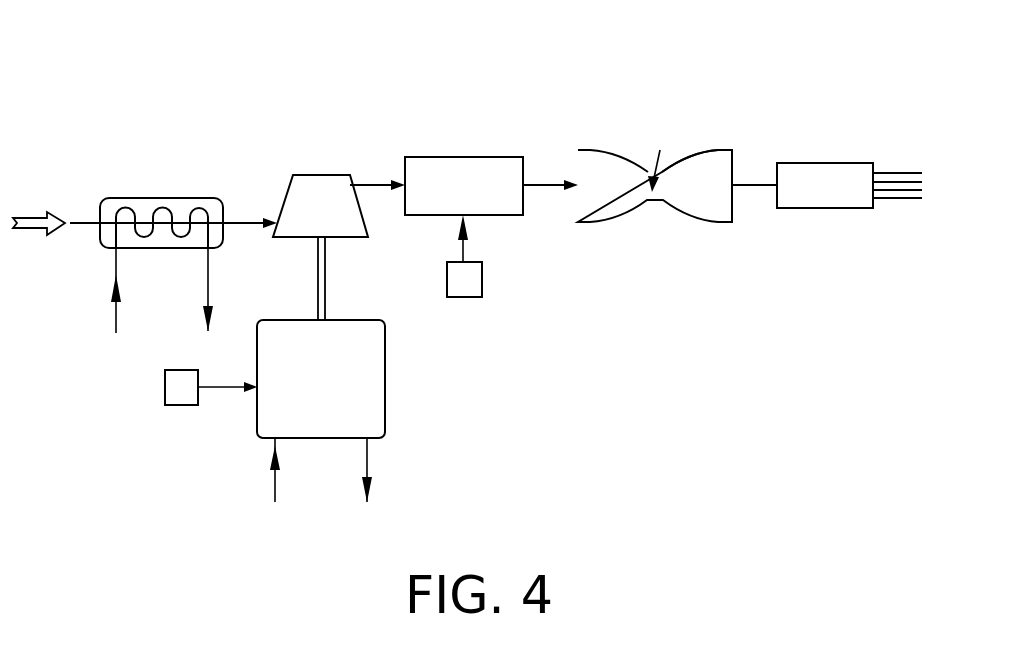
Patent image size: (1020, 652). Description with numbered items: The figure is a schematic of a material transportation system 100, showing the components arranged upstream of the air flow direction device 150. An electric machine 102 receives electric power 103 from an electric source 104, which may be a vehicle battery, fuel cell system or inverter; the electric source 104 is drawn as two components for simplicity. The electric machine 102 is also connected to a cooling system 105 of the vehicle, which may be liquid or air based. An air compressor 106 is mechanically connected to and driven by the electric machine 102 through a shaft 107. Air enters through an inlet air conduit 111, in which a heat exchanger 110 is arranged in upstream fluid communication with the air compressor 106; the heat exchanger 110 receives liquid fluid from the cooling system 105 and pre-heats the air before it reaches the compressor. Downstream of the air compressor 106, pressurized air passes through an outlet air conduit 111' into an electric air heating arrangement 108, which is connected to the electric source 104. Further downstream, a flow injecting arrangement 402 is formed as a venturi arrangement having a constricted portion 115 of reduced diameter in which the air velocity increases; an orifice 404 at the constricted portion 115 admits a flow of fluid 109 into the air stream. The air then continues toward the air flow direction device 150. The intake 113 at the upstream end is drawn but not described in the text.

The material transportation system 100 is at (200, 58).
The electric machine 102 is at (315, 438).
The electric power 103 is at (215, 388).
The electric source 104 is at (165, 390).
The cooling system 105 is at (117, 313).
The air compressor 106 is at (317, 175).
The shaft 107 is at (327, 280).
The electric air heating arrangement 108 is at (468, 157).
The flow of fluid 109 is at (665, 170).
The heat exchanger 110 is at (163, 198).
The inlet air conduit 111 is at (275, 165).
The outlet air conduit 111' is at (592, 142).
The air intake 113 is at (30, 215).
The constricted portion 115 is at (657, 200).
The air flow direction device 150 is at (838, 134).
The flow injecting arrangement 402 is at (702, 151).
The orifice 404 is at (650, 172).